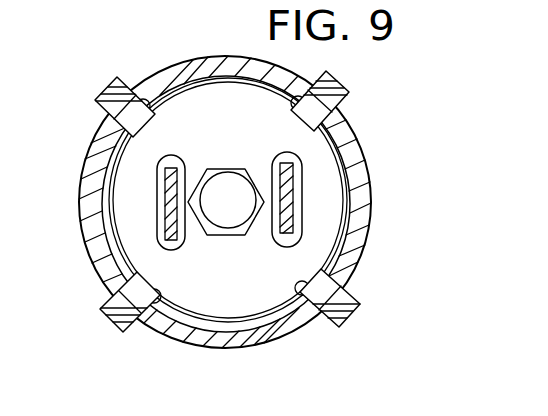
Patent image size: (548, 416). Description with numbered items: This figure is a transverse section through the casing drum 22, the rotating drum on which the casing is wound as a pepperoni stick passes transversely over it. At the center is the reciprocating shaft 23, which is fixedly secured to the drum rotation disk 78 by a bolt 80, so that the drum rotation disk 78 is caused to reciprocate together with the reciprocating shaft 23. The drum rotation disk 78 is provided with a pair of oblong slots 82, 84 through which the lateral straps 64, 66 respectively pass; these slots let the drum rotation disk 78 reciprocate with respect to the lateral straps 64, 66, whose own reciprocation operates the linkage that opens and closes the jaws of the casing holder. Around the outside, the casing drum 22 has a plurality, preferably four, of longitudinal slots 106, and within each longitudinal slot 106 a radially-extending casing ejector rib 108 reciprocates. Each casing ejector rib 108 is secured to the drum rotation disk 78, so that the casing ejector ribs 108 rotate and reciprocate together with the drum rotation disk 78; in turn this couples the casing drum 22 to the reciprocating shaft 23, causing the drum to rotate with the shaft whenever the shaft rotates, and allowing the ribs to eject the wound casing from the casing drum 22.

The casing drum 22 is at (256, 215).
The drum rotation disk 78 is at (352, 137).
The longitudinal slots 106 is at (288, 92).
The casing ejector ribs 108 is at (322, 73).
The bolt 80 is at (250, 168).
The reciprocating shaft 23 is at (229, 204).
The lateral strap 64 is at (191, 208).
The lateral strap 66 is at (306, 200).
The oblong slot 82 is at (175, 251).
The oblong slot 84 is at (297, 220).